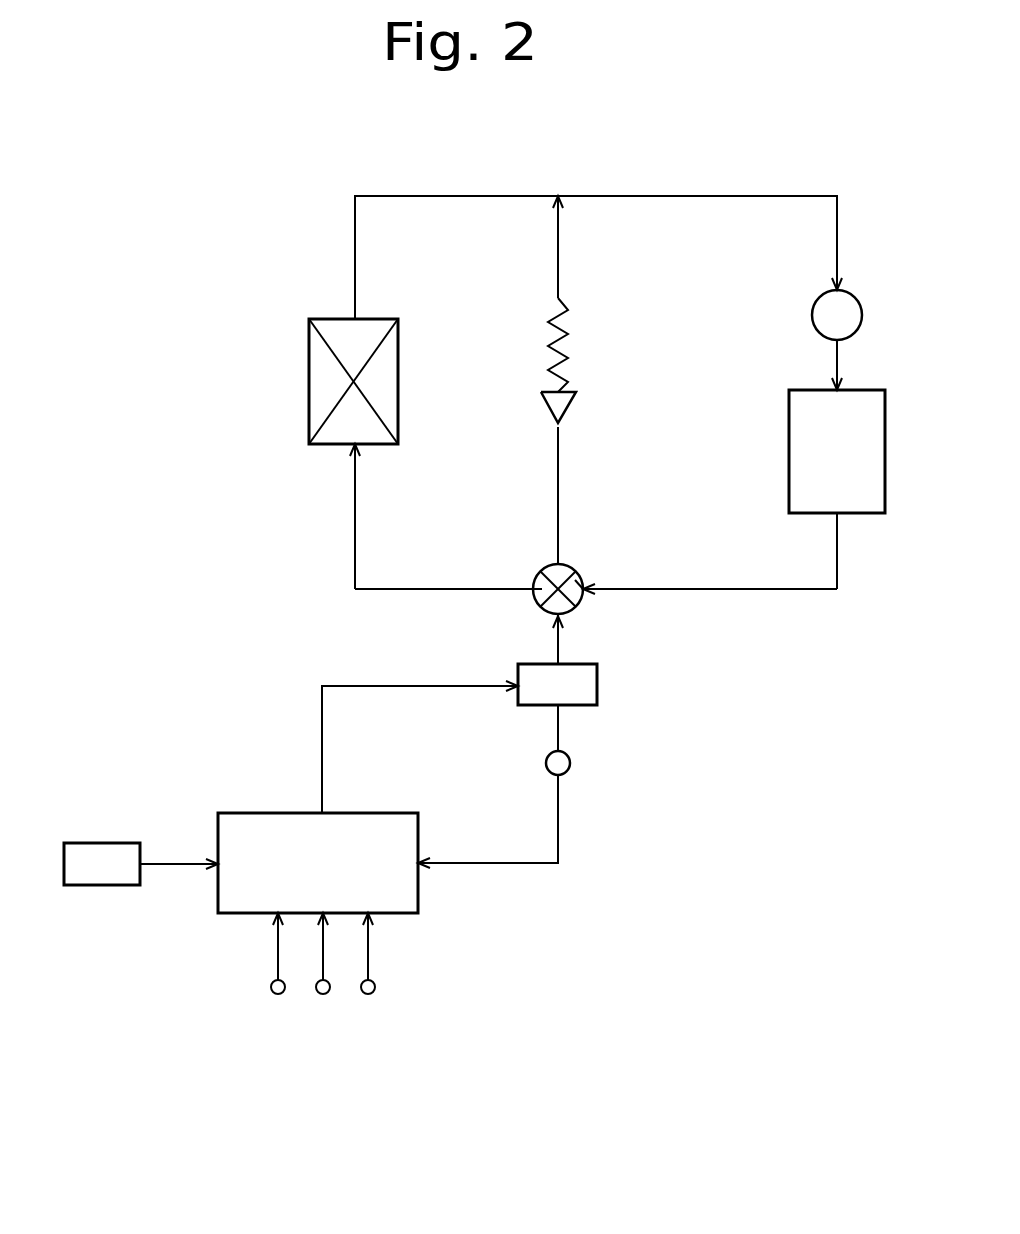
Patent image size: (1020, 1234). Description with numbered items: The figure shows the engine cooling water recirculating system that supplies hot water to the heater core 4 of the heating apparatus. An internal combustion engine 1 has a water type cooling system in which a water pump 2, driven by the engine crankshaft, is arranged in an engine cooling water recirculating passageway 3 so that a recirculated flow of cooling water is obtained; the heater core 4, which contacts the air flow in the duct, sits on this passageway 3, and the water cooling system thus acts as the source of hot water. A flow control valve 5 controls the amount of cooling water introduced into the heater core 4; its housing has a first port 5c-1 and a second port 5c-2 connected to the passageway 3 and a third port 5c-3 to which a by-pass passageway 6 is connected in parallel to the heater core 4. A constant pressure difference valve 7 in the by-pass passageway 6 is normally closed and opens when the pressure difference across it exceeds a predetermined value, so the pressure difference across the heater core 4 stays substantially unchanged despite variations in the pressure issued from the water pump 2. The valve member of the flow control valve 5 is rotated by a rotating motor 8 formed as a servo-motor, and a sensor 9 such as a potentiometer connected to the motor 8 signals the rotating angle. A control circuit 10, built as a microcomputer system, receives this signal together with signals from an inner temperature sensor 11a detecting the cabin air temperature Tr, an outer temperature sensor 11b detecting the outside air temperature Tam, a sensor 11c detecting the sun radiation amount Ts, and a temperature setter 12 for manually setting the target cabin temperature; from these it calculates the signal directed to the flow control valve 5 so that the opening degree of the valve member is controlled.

The internal combustion engine 1 is at (800, 425).
The water pump 2 is at (812, 312).
The engine cooling water recirculating passageway 3 is at (736, 590).
The heater core 4 is at (309, 385).
The flow control valve 5 is at (540, 572).
The first port 5c-1 is at (575, 582).
The second port 5c-2 is at (533, 592).
The third port 5c-3 is at (563, 562).
The by-pass passageway 6 is at (558, 470).
The constant pressure difference valve 7 is at (548, 412).
The rotating motor 8 is at (597, 686).
The sensor 9 is at (570, 762).
The control circuit 10 is at (256, 813).
The inner temperature sensor 11a is at (274, 992).
The outer temperature sensor 11b is at (319, 995).
The sun radiation sensor 11c is at (373, 993).
The temperature setter 12 is at (108, 855).
The inner air temperature Tr is at (276, 955).
The outer air temperature Tam is at (325, 947).
The sun radiation amount Ts is at (370, 958).